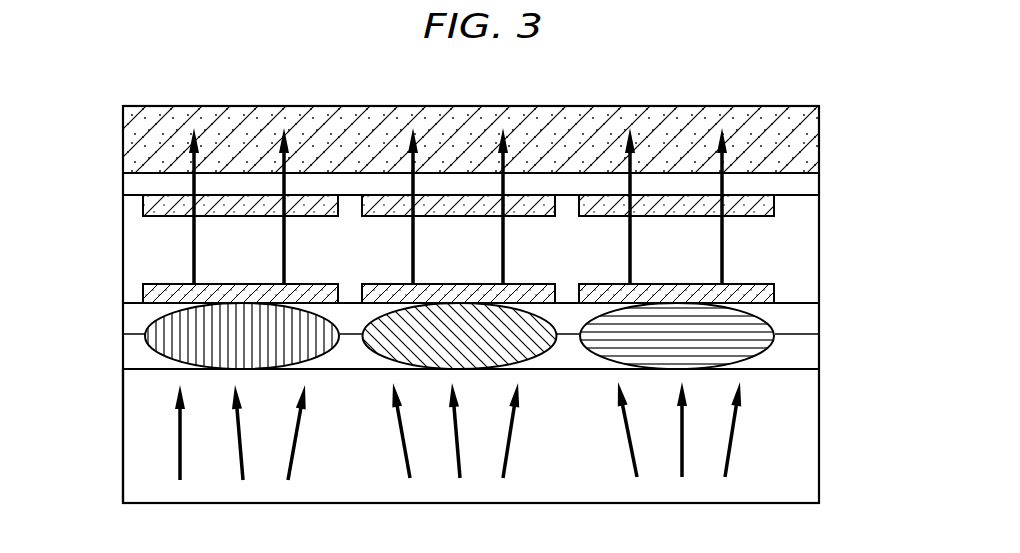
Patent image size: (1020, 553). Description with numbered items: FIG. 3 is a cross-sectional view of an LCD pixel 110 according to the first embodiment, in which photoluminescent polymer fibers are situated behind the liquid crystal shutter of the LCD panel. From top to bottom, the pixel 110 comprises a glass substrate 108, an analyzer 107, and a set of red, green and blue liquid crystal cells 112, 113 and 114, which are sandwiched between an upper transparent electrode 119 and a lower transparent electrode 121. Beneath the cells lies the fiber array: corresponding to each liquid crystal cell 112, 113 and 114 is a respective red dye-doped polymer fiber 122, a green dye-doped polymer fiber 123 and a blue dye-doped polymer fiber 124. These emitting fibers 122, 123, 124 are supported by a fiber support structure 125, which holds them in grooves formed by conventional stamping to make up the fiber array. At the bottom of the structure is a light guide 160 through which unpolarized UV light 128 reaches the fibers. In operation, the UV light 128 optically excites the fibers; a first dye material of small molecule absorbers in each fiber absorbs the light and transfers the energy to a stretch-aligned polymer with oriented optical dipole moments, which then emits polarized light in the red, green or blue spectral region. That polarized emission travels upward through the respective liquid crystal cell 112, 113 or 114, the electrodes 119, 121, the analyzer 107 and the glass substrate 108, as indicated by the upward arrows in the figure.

The pixel 110 is at (143, 82).
The glass substrate 108 is at (793, 115).
The analyzer 107 is at (135, 191).
The transparent electrode 119 is at (755, 201).
The transparent electrode 121 is at (763, 292).
The red liquid crystal cell 112 is at (193, 262).
The green liquid crystal cell 113 is at (412, 258).
The blue liquid crystal cell 114 is at (630, 256).
The red dye-doped polymer fiber 122 is at (165, 347).
The green dye-doped polymer fiber 123 is at (386, 342).
The blue dye-doped polymer fiber 124 is at (755, 327).
The fiber support structure 125 is at (803, 353).
The light guide 160 is at (135, 478).
The unpolarized UV light 128 is at (733, 455).